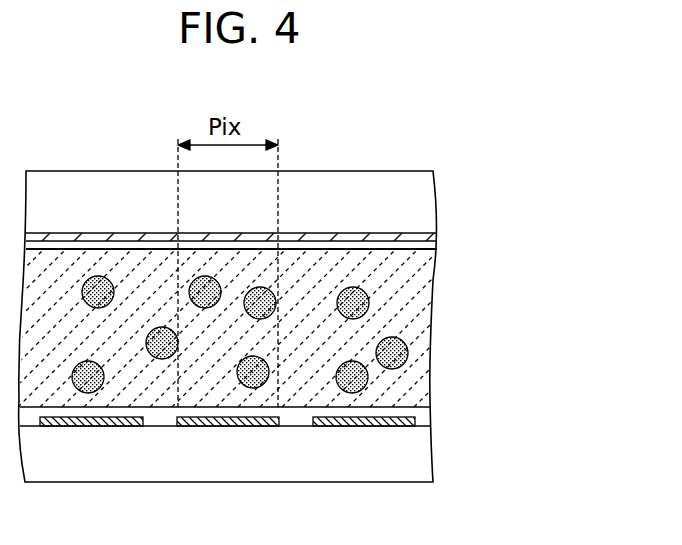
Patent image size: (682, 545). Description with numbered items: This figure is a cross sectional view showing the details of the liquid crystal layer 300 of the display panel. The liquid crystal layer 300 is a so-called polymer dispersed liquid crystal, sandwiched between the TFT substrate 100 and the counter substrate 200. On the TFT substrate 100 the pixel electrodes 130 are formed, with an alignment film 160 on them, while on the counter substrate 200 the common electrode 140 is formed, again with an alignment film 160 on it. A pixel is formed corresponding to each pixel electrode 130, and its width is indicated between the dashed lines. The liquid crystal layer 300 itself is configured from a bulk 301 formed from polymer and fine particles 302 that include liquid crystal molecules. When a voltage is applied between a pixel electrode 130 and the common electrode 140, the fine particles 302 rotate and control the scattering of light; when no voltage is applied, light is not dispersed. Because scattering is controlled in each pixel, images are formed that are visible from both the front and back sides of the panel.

The TFT substrate 100 is at (420, 457).
The pixel electrode 130 is at (420, 423).
The common electrode 140 is at (420, 236).
The alignment film 160 is at (427, 246).
The counter substrate 200 is at (423, 204).
The liquid crystal layer 300 is at (296, 328).
The bulk 301 is at (422, 295).
The fine particles 302 is at (408, 350).